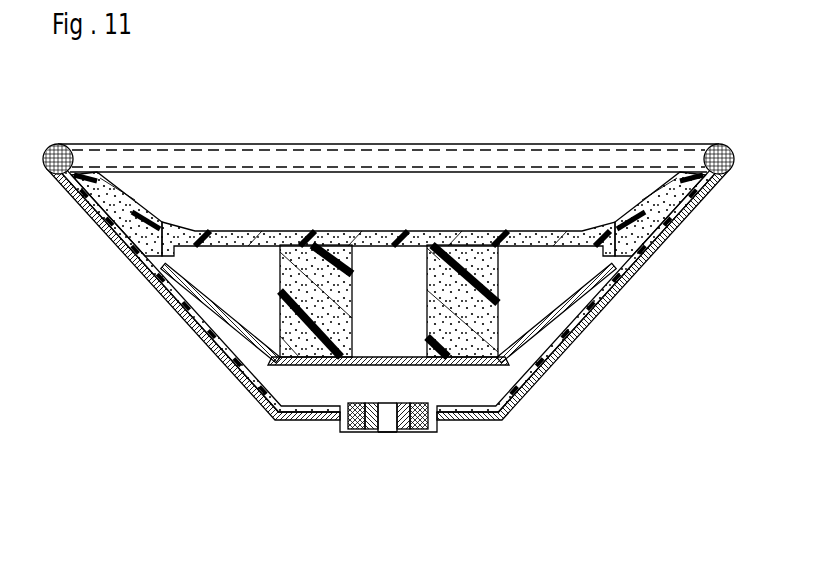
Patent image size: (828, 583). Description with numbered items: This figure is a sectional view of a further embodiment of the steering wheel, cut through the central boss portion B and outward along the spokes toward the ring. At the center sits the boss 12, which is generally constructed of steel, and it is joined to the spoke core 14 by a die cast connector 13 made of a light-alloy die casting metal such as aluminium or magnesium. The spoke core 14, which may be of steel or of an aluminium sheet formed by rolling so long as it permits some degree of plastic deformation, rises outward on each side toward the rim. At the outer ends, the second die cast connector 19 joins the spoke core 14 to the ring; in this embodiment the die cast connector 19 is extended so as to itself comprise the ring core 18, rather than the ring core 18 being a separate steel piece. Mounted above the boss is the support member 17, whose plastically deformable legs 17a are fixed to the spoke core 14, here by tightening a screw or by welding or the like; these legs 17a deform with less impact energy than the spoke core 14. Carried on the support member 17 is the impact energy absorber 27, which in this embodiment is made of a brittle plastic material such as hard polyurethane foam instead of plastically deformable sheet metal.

The boss 12 is at (372, 433).
The die cast connector 13 is at (352, 433).
The spoke core 14 is at (223, 362).
The support member 17 is at (382, 358).
The leg 17a is at (236, 325).
The ring core 18 is at (372, 162).
The die cast connector 19 is at (53, 145).
The impact energy absorber 27 is at (315, 250).
The boss portion B is at (441, 444).